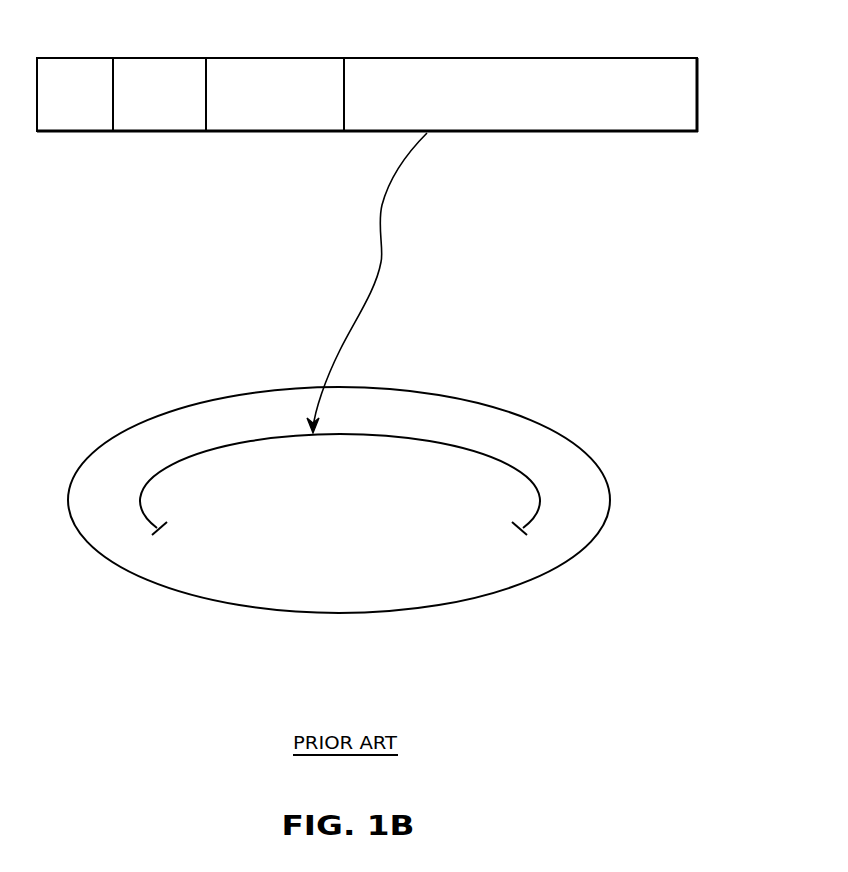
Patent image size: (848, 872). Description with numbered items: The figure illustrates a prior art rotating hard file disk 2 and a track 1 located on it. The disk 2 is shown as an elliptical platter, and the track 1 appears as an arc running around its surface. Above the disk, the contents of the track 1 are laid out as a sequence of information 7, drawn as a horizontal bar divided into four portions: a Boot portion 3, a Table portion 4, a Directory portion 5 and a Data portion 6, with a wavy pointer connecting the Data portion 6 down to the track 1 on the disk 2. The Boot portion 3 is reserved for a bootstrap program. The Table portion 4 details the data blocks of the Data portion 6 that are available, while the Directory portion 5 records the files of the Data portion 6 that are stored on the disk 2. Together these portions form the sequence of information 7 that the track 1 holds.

The track 1 is at (540, 503).
The disk 2 is at (533, 422).
The Boot portion 3 is at (77, 56).
The Table portion 4 is at (165, 56).
The Directory portion 5 is at (286, 56).
The Data portion 6 is at (413, 56).
The sequence of information 7 is at (698, 105).